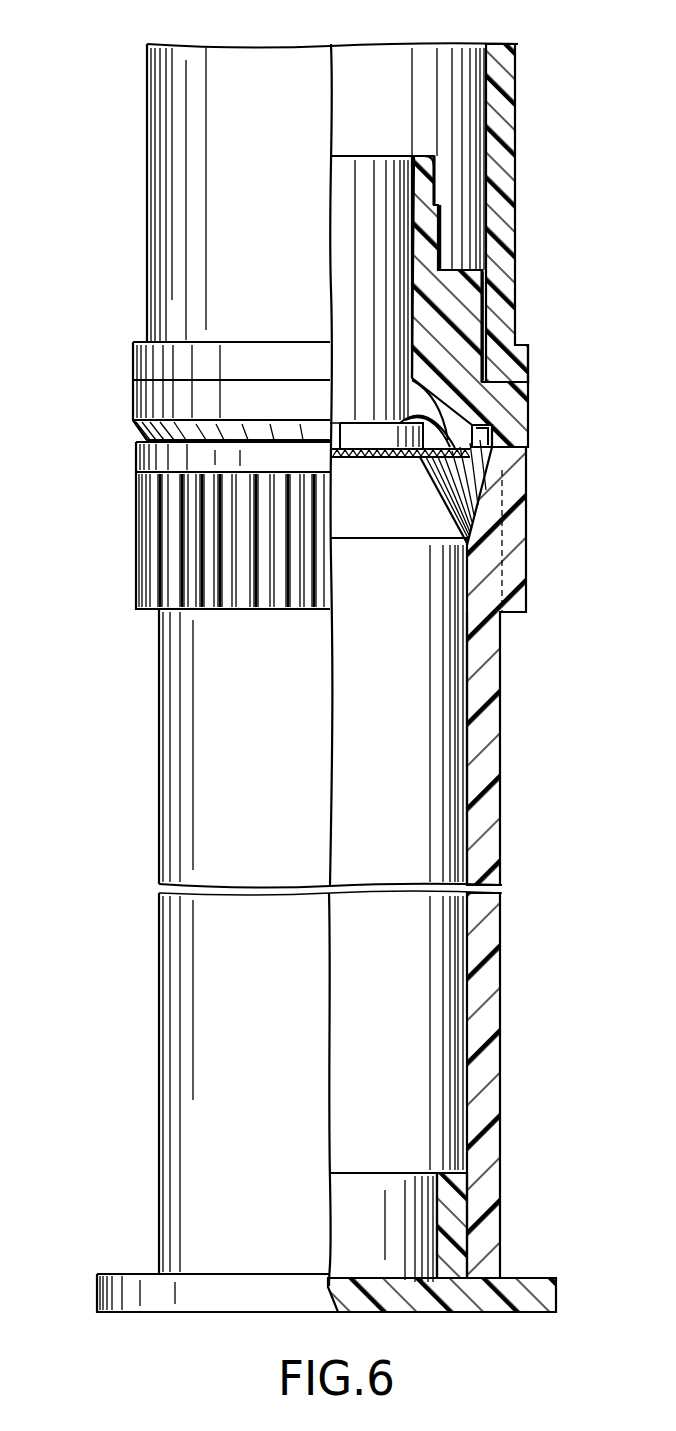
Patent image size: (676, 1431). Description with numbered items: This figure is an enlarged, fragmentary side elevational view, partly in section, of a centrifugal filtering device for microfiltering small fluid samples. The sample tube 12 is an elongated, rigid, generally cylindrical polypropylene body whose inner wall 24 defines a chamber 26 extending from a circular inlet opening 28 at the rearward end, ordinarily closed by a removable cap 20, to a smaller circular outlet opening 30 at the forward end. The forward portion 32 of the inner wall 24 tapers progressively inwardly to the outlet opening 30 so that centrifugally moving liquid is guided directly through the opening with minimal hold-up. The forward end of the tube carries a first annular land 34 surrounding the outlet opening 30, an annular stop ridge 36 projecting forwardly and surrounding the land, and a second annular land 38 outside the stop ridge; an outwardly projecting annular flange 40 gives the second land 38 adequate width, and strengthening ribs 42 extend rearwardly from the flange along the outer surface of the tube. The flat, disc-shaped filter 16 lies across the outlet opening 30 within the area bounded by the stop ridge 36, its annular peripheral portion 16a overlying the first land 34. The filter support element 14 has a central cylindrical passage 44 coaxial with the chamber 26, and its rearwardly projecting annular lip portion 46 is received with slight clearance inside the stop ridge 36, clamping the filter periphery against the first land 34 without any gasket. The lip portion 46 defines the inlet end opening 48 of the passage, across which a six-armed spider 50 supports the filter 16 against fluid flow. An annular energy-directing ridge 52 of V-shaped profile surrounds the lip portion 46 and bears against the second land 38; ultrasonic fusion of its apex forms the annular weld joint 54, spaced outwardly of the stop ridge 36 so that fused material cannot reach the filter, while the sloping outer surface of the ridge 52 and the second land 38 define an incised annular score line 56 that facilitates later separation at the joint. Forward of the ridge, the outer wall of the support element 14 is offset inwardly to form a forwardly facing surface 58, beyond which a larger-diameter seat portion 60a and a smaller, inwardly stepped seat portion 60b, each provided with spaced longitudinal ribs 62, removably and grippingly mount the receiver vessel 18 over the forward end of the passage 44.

The sample tube 12 is at (157, 740).
The filter support element 14 is at (458, 270).
The filter 16 is at (347, 458).
The annular peripheral portion 16a is at (392, 458).
The receiver vessel 18 is at (518, 83).
The cap 20 is at (104, 1294).
The inner wall 24 is at (461, 790).
The chamber 26 is at (388, 763).
The inlet opening 28 is at (455, 1228).
The outlet opening 30 is at (488, 508).
The forward portion of the inner wall 32 is at (500, 532).
The first annular land 34 is at (488, 466).
The stop ridge 36 is at (440, 407).
The second annular land 38 is at (498, 450).
The annular flange 40 is at (140, 450).
The strengthening ribs 42 is at (150, 531).
The central cylindrical passage 44 is at (372, 248).
The annular lip portion 46 is at (437, 430).
The inlet end opening 48 is at (345, 422).
The six-armed spider 50 is at (326, 440).
The energy-directing ridge 52 is at (500, 412).
The annular weld joint 54 is at (530, 430).
The annular score line 56 is at (137, 441).
The forwardly facing surface 58 is at (516, 377).
The seat portion 60a is at (485, 303).
The seat portion 60b is at (437, 182).
The longitudinal ribs 62 is at (441, 233).